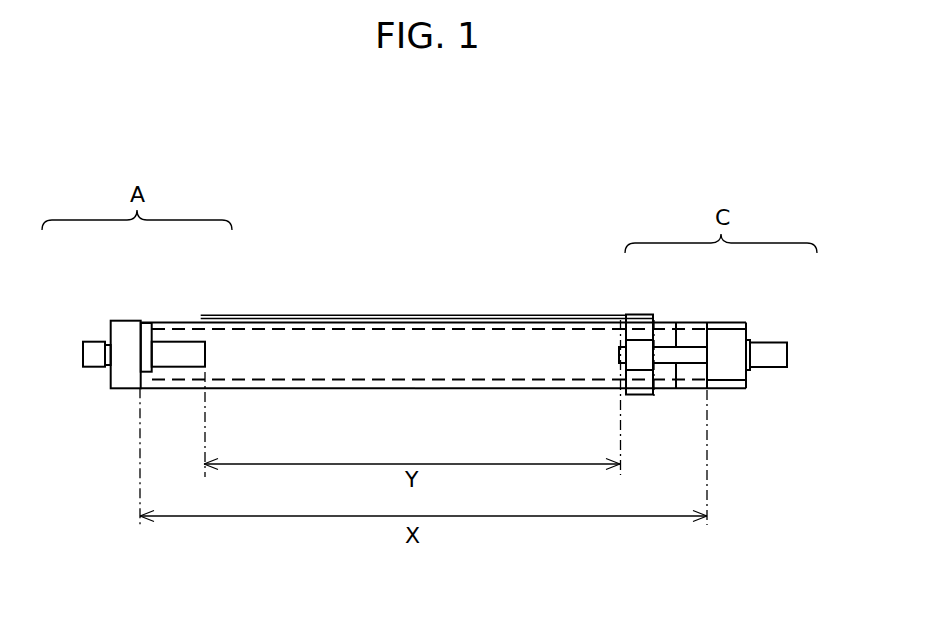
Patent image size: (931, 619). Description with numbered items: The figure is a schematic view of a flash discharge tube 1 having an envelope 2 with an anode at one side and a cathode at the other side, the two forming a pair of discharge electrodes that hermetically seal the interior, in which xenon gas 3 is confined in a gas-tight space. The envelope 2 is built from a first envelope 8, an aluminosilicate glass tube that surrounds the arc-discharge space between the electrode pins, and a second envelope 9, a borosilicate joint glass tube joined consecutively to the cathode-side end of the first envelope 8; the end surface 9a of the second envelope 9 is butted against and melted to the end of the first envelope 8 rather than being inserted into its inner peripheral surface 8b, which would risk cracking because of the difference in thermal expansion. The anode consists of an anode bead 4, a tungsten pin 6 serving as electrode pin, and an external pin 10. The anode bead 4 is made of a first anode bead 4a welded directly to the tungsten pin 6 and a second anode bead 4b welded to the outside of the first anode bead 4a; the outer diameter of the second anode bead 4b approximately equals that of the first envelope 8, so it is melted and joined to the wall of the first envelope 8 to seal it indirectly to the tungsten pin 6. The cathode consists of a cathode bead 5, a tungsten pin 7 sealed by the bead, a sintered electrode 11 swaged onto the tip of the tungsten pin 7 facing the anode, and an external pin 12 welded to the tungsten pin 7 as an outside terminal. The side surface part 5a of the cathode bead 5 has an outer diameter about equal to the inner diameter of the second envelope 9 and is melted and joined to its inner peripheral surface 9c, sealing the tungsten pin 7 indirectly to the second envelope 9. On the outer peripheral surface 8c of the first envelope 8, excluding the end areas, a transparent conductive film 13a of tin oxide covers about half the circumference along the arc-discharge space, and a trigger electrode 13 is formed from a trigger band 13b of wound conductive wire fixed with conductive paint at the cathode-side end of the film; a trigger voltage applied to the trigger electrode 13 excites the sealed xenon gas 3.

The flash discharge tube 1 is at (713, 175).
The envelope 2 is at (318, 313).
The xenon gas 3 is at (390, 347).
The anode bead 4 is at (140, 305).
The first anode bead 4a is at (147, 355).
The second anode bead 4b is at (123, 352).
The cathode bead 5 is at (741, 314).
The side surface part 5a is at (737, 326).
The tungsten pin 6 is at (173, 357).
The tungsten pin 7 is at (670, 355).
The first envelope 8 is at (443, 416).
The inner peripheral surface 8b is at (297, 379).
The outer peripheral surface 8c is at (561, 440).
The second envelope 9 is at (723, 410).
The end surface 9a is at (675, 387).
The inner peripheral surface 9c is at (743, 383).
The external pin 10 is at (94, 348).
The sintered electrode 11 is at (640, 350).
The external pin 12 is at (773, 355).
The trigger electrode 13 is at (427, 301).
The transparent conductive film 13a is at (520, 315).
The trigger band 13b is at (624, 314).